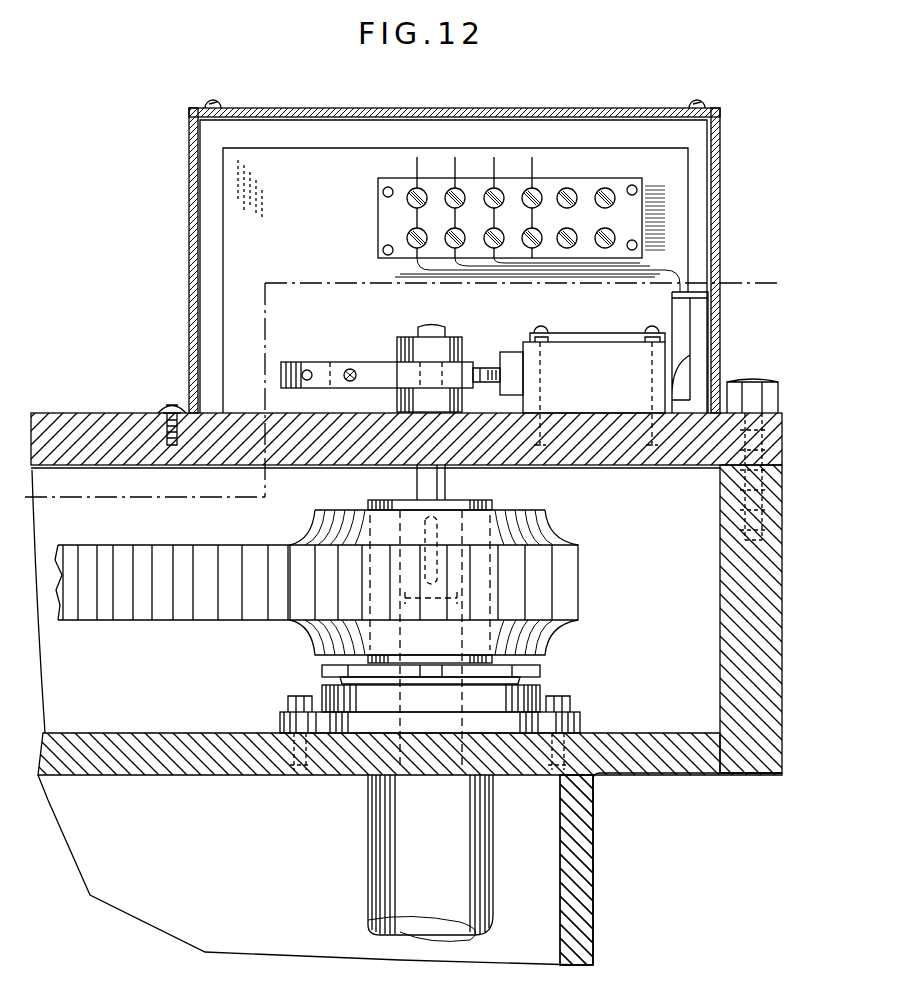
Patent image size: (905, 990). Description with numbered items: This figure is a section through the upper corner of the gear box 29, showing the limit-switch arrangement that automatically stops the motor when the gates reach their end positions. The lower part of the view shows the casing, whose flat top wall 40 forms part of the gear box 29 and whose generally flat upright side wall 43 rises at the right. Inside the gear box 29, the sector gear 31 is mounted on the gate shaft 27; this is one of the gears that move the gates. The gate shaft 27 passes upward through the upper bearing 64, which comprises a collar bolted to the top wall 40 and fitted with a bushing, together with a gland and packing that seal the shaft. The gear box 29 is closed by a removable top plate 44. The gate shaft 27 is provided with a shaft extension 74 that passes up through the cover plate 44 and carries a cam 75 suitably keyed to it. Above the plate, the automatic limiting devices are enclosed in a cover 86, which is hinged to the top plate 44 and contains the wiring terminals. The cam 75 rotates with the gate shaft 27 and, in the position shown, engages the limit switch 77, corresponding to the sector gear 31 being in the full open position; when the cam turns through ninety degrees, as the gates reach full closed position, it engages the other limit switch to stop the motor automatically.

The gate shaft 27 is at (385, 823).
The gear box 29 is at (737, 570).
The sector gear 31 is at (185, 607).
The top wall 40 is at (214, 758).
The side wall 43 is at (578, 932).
The top plate 44 is at (87, 425).
The upper bearing 64 is at (548, 683).
The shaft extension 74 is at (446, 486).
The cam 75 is at (330, 368).
The limit switch 77 is at (606, 386).
The cover 86 is at (720, 192).